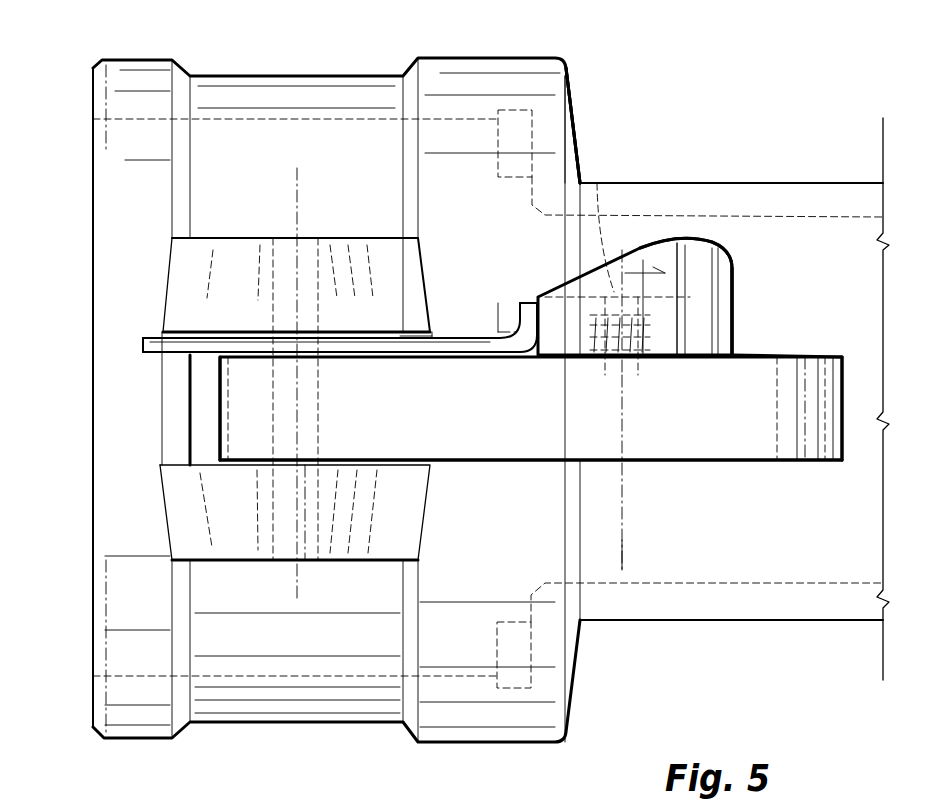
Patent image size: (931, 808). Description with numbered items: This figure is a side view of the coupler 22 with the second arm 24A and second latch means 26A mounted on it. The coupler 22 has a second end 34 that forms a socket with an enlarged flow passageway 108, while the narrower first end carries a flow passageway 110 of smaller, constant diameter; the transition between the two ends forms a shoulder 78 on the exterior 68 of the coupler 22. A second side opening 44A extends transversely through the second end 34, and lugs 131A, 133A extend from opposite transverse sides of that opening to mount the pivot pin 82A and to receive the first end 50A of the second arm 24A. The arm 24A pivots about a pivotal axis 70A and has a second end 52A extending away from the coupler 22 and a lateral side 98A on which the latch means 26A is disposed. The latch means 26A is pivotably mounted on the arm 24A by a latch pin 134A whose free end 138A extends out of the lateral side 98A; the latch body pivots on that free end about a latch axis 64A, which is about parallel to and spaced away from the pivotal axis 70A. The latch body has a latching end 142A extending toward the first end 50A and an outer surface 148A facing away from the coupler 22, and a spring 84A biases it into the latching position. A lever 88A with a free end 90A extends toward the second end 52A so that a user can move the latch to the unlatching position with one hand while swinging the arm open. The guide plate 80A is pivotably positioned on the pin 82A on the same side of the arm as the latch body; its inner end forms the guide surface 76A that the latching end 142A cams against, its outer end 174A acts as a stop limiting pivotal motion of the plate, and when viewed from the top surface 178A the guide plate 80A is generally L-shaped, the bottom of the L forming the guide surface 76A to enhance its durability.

The coupler 22 is at (675, 145).
The second end 34 is at (306, 92).
The enlarged flow passageway 108 is at (126, 123).
The exterior 68 is at (576, 128).
The shoulder 78 is at (573, 125).
The flow passageway 110 is at (790, 220).
The lug 131A is at (235, 253).
The pivotal axis 70A is at (298, 175).
The lug 133A is at (197, 535).
The pivot pin 82A is at (304, 532).
The top surface 178A is at (394, 350).
The outer end 174A is at (150, 341).
The guide plate 80A is at (455, 333).
The guide surface 76A is at (530, 305).
The latching end 142A is at (552, 305).
The second arm 24A is at (518, 432).
The first end 50A is at (222, 381).
The second side opening 44A is at (190, 420).
The second end 52A is at (838, 417).
The lateral side 98A is at (762, 355).
The second latch means 26A is at (665, 273).
The outer surface 148A is at (643, 275).
The lever 88A is at (653, 267).
The free end 138A is at (610, 167).
The free end 90A is at (712, 257).
The spring 84A is at (653, 363).
The latch pin 134A is at (633, 472).
The latch axis 64A is at (622, 550).